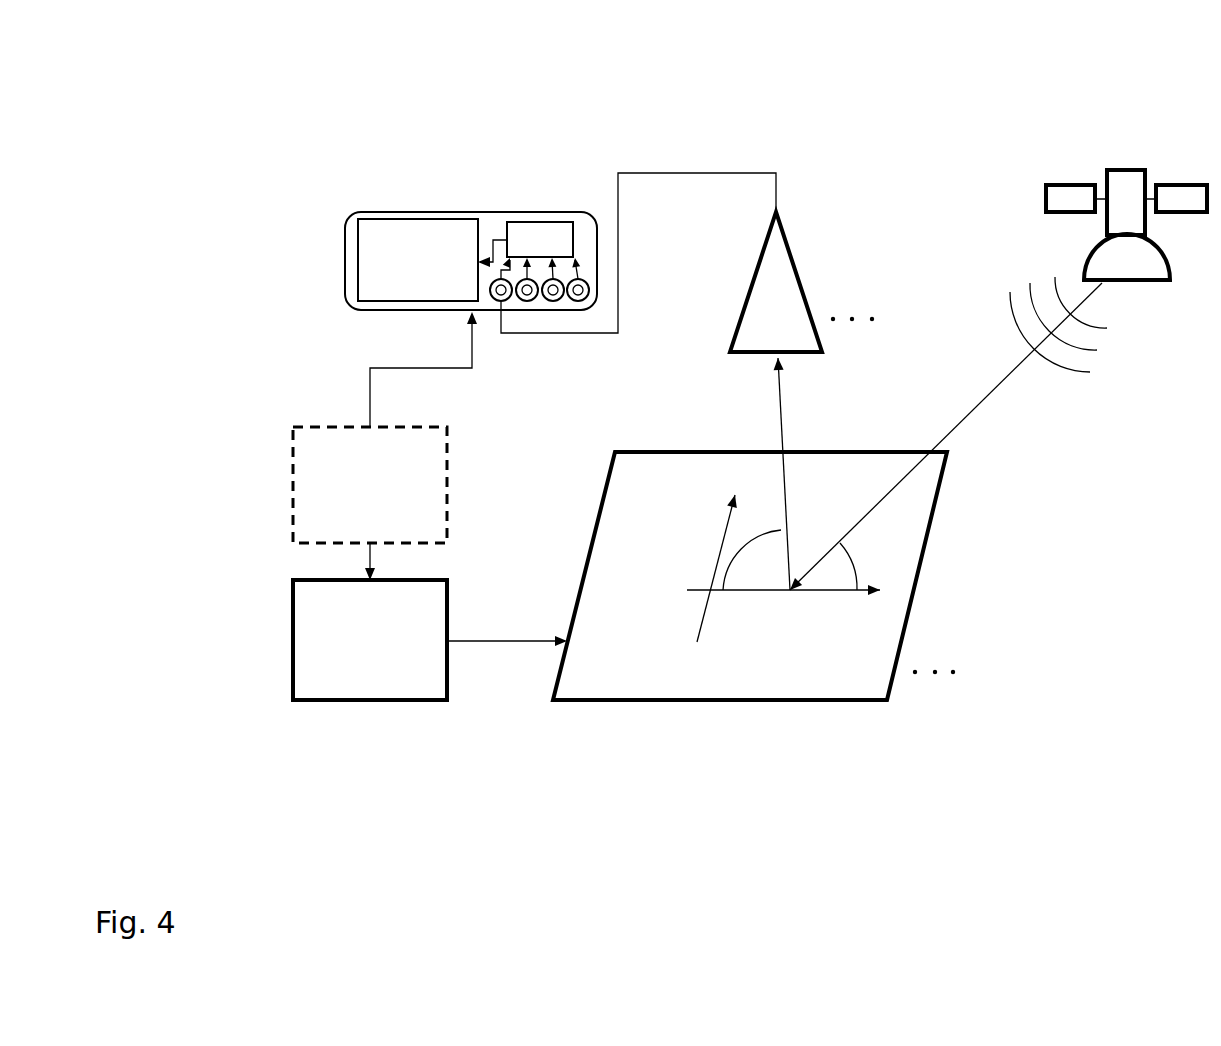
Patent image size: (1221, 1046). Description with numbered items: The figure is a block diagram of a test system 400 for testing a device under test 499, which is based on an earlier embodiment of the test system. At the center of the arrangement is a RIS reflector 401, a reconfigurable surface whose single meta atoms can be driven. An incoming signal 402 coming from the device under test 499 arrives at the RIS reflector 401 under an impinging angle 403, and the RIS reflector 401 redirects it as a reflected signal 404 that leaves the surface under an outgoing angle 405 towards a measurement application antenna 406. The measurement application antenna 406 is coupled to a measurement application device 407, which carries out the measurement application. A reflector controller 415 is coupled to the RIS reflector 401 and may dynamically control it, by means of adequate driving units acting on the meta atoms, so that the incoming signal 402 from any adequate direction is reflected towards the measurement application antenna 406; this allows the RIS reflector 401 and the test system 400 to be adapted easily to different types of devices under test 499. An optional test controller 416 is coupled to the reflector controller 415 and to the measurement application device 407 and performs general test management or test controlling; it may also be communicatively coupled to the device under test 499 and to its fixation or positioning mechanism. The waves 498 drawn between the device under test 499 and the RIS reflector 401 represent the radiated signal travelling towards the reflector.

The test system 400 is at (305, 800).
The RIS reflector 401 is at (597, 677).
The incoming signal 402 is at (944, 432).
The impinging angle 403 is at (850, 563).
The reflected signal 404 is at (778, 398).
The outgoing angle 405 is at (747, 547).
The measurement application antenna 406 is at (783, 222).
The measurement application device 407 is at (464, 212).
The reflector controller 415 is at (293, 635).
The test controller 416 is at (295, 478).
The satellite signal waves 498 is at (1032, 288).
The device under test 499 is at (1117, 170).